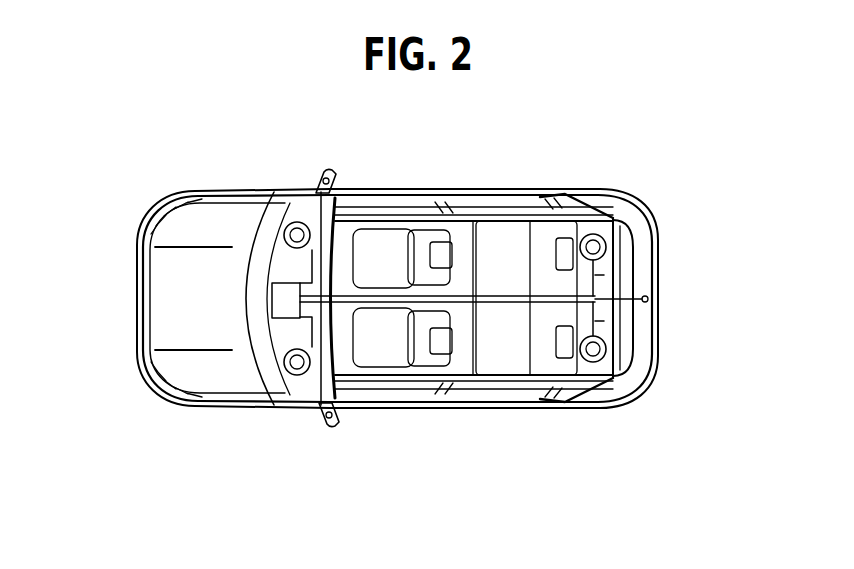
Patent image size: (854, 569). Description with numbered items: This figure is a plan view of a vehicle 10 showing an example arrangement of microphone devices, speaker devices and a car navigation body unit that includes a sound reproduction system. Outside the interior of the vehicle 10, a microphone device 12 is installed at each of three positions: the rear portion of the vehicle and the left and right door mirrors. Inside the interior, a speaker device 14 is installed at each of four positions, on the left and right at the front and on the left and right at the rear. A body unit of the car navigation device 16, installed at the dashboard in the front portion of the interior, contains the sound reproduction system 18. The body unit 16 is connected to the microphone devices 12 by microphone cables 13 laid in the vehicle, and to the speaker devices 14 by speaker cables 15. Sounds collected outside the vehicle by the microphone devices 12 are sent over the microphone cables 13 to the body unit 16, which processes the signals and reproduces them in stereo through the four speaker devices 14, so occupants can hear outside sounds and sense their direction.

The vehicle 10 is at (517, 109).
The microphone device 12 is at (325, 171).
The microphone cable 13 is at (313, 265).
The speaker device 14 is at (288, 222).
The speaker cable 15 is at (334, 283).
The body unit of car navigation device 16 is at (272, 299).
The sound reproduction system 18 is at (302, 268).